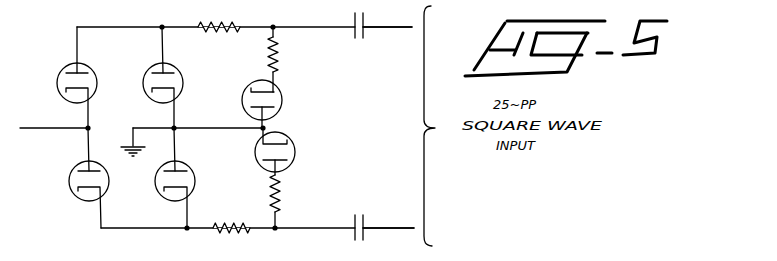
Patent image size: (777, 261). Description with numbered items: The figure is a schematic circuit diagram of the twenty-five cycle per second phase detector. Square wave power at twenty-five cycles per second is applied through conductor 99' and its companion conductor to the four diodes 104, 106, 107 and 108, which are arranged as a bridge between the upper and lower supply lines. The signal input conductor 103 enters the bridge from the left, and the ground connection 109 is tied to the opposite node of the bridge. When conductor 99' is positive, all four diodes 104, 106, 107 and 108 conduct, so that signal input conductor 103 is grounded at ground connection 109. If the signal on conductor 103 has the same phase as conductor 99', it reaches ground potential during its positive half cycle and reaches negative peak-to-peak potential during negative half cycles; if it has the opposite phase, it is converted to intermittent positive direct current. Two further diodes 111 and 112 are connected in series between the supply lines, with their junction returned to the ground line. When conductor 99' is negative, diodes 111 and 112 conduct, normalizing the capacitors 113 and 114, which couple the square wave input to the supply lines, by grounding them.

The signal input conductor 103 is at (64, 127).
The diode 104 is at (83, 63).
The diode 106 is at (169, 63).
The diode 107 is at (103, 192).
The diode 108 is at (191, 193).
The ground connection 109 is at (157, 127).
The diode 111 is at (283, 97).
The diode 112 is at (293, 146).
The capacitor 113 is at (352, 18).
The capacitor 114 is at (354, 236).
The conductor 99' is at (387, 37).